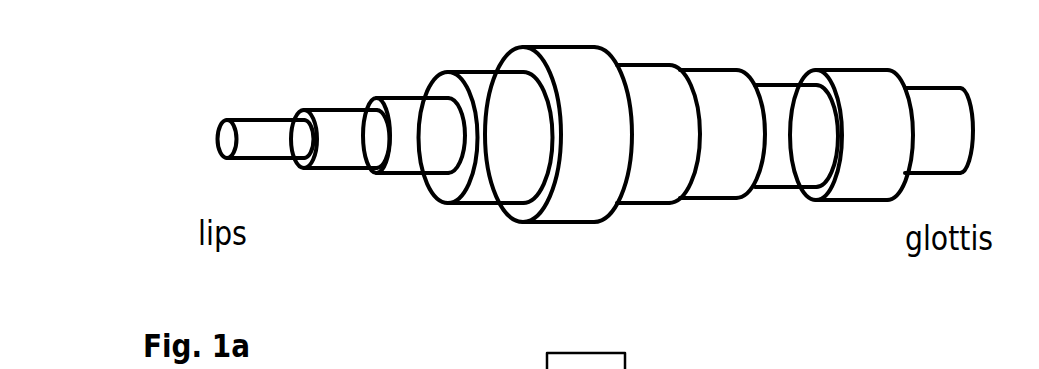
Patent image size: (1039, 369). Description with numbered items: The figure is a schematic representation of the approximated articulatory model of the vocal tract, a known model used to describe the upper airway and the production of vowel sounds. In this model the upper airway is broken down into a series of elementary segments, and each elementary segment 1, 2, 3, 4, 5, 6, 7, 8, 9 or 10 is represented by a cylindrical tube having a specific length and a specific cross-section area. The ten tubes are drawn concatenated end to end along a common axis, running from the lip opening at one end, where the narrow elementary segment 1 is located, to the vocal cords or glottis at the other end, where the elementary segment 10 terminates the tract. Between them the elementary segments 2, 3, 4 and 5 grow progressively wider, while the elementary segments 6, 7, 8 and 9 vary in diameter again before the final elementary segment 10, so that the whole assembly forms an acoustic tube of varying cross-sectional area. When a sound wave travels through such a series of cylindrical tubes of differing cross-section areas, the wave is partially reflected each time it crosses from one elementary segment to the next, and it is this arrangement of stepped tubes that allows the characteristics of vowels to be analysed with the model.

The elementary segment 1 is at (266, 111).
The elementary segment 2 is at (340, 115).
The elementary segment 3 is at (414, 109).
The elementary segment 4 is at (486, 107).
The elementary segment 5 is at (558, 111).
The elementary segment 6 is at (658, 107).
The elementary segment 7 is at (722, 105).
The elementary segment 8 is at (796, 109).
The elementary segment 9 is at (851, 108).
The elementary segment 10 is at (939, 105).